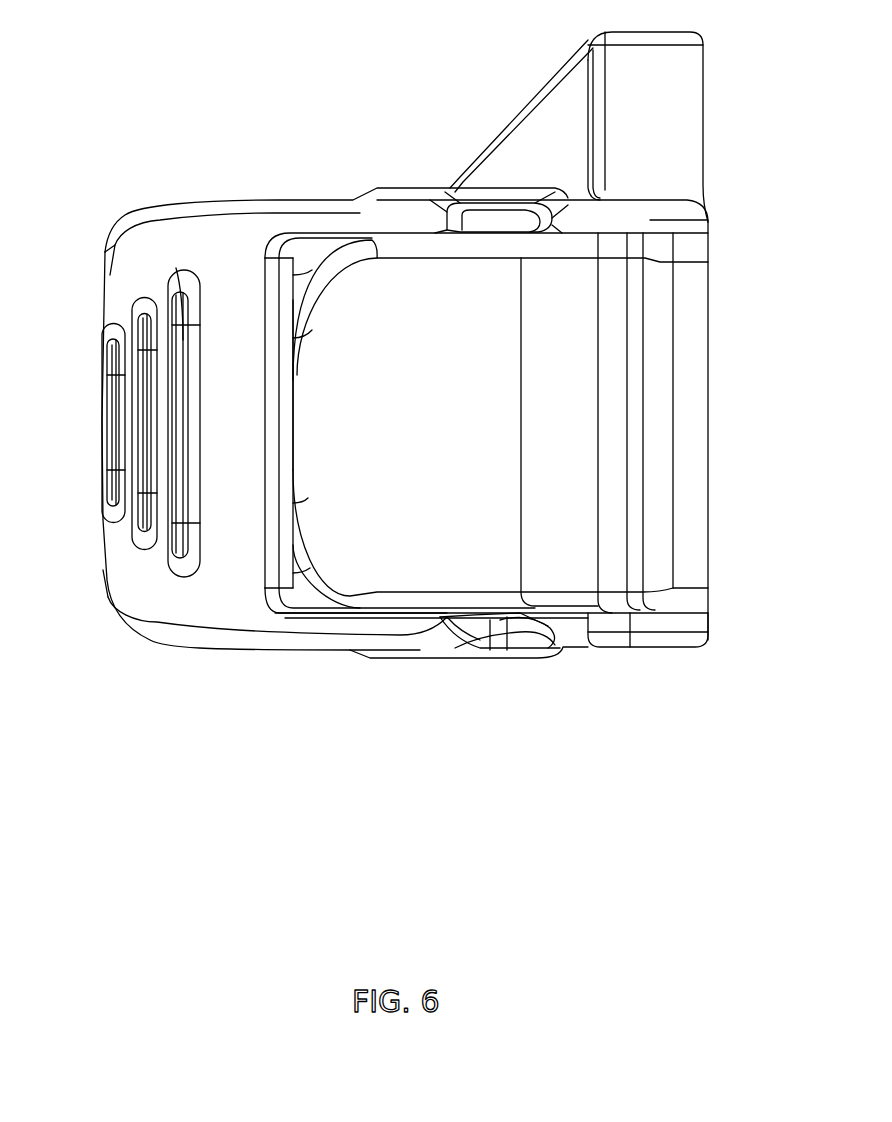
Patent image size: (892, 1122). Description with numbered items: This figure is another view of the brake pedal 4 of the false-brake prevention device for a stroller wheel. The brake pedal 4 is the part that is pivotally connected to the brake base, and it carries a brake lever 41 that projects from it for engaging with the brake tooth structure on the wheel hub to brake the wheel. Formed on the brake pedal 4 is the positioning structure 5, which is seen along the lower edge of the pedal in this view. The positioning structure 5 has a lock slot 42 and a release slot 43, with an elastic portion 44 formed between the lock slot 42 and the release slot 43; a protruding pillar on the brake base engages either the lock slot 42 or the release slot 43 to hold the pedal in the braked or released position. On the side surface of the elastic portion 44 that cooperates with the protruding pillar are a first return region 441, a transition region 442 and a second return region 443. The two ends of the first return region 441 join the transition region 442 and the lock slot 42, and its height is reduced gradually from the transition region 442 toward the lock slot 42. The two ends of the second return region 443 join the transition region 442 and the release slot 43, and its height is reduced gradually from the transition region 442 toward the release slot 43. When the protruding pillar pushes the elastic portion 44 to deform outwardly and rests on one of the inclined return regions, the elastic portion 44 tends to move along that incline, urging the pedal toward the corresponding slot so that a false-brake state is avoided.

The brake pedal 4 is at (105, 275).
The brake lever 41 is at (677, 123).
The lock slot 42 is at (577, 628).
The release slot 43 is at (417, 630).
The elastic portion 44 is at (625, 777).
The first return region 441 is at (540, 637).
The transition region 442 is at (507, 617).
The second return region 443 is at (492, 620).
The positioning structure 5 is at (703, 832).